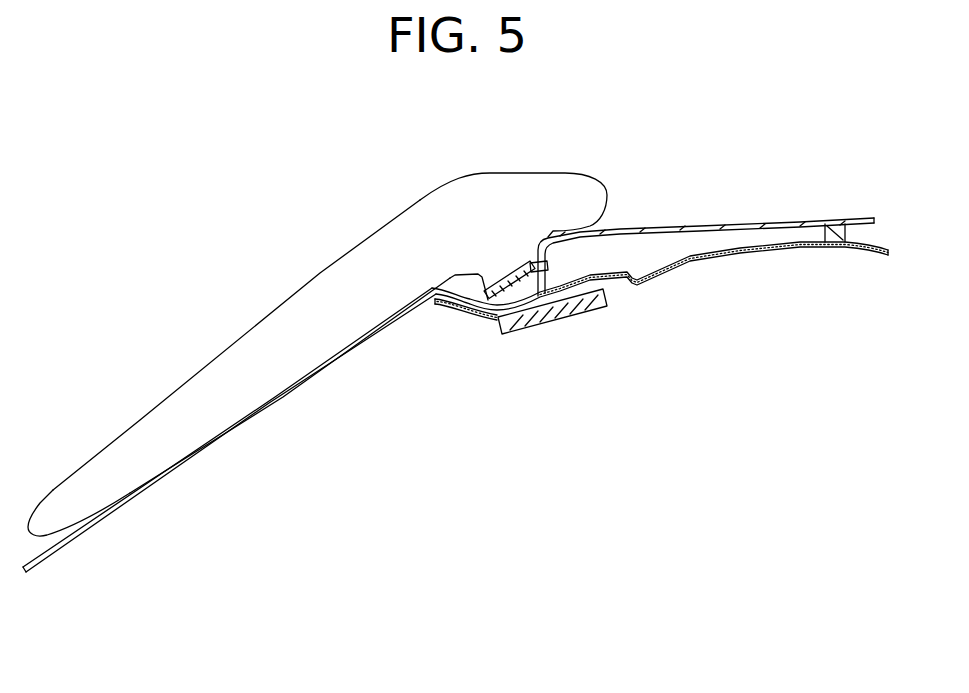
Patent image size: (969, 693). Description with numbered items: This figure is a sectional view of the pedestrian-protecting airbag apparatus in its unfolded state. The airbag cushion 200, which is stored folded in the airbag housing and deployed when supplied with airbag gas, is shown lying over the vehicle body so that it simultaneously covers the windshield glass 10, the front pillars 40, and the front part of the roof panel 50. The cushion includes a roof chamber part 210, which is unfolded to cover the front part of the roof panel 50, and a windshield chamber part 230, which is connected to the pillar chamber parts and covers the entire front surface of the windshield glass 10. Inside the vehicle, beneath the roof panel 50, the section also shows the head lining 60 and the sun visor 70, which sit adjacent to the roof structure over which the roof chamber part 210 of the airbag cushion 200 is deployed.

The windshield glass 10 is at (50, 562).
The front pillars 40 is at (460, 300).
The roof panel 50 is at (757, 227).
The head lining 60 is at (783, 248).
The sun visor 70 is at (557, 318).
The airbag cushion 200 is at (325, 316).
The roof chamber part 210 is at (573, 190).
The windshield chamber part 230 is at (127, 445).